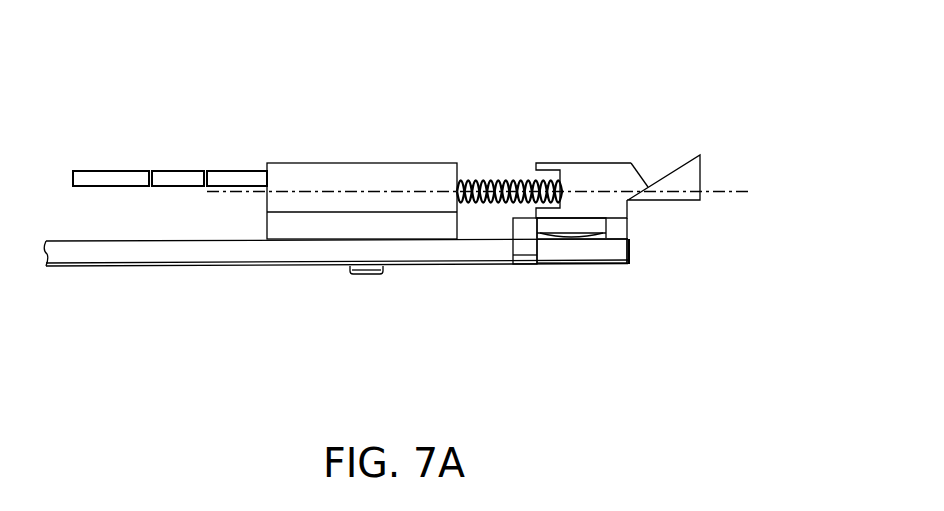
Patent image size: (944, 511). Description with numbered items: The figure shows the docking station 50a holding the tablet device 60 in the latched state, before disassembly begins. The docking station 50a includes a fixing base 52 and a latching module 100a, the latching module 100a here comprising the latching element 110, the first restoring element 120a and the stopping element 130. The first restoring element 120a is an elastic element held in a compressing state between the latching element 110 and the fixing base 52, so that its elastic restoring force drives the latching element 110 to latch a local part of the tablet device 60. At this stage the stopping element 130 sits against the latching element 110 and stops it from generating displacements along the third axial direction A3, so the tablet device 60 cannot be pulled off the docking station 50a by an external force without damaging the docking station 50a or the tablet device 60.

The latching module 100a is at (659, 77).
The latching element 110 is at (612, 175).
The first restoring element 120a is at (507, 178).
The tablet device 60 is at (677, 180).
The third axial direction A3 is at (725, 188).
The docking station 50a is at (425, 302).
The stopping element 130 is at (525, 228).
The fixing base 52 is at (594, 250).